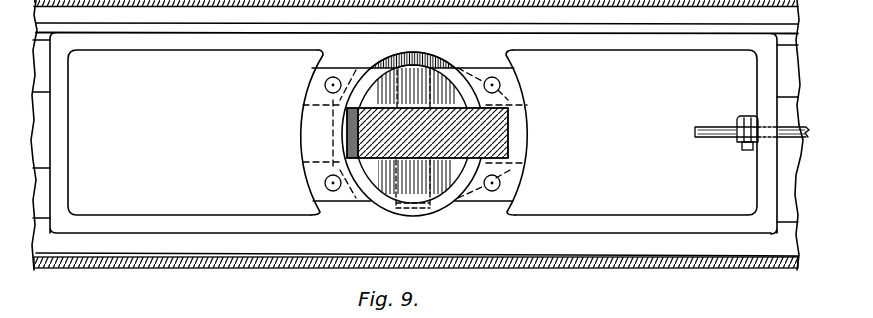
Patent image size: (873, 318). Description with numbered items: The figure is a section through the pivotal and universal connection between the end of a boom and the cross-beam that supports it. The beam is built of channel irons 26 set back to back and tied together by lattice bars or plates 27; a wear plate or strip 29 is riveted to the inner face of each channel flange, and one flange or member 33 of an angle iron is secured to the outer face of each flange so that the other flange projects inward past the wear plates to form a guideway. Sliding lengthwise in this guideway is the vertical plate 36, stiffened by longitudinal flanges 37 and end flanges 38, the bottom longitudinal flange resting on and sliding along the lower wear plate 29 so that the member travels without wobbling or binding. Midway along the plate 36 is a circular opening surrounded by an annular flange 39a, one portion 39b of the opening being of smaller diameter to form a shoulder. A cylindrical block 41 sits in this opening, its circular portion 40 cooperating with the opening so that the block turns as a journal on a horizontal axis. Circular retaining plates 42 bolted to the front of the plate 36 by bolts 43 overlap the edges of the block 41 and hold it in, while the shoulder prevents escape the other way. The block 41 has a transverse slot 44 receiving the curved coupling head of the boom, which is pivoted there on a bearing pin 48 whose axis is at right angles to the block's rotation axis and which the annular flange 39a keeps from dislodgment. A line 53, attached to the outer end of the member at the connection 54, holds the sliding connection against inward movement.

The channel iron 26 is at (787, 78).
The lattice bar or plate 27 is at (141, 313).
The wear plate or strip 29 is at (155, 5).
The flange of angle iron 33 is at (670, 2).
The vertical plate 36 is at (412, 132).
The longitudinal stiffening flange 37 is at (185, 44).
The end stiffening flange 38 is at (62, 147).
The annular flange 39a is at (478, 60).
The smaller-diameter portion of opening 39b is at (450, 63).
The circular portion of block 40 is at (390, 58).
The cylindrical block 41 is at (446, 200).
The circular retaining plate 42 is at (300, 125).
The bolt 43 is at (333, 85).
The transverse slot or opening 44 is at (347, 150).
The bearing pin 48 is at (400, 193).
The line 53 is at (800, 142).
The connection 54 is at (741, 147).